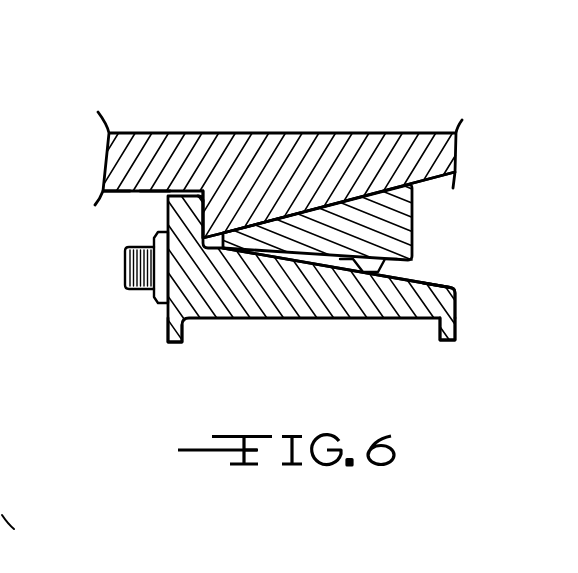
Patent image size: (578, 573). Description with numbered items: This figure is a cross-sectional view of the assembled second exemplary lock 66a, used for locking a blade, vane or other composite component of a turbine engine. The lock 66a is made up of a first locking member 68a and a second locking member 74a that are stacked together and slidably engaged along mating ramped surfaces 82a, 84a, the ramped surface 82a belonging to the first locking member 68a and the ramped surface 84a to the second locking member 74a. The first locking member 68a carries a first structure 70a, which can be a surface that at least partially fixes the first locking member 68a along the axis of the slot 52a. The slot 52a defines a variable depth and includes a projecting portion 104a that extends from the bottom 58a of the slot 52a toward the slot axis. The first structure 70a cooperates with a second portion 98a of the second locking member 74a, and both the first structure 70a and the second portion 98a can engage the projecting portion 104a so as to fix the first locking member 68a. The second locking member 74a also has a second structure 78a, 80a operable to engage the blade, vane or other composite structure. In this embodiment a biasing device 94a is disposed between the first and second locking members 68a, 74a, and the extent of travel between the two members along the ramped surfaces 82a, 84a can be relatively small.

The slot 52a is at (110, 191).
The bottom of the slot 58a is at (144, 191).
The projecting portion 104a is at (222, 202).
The first structure 70a is at (323, 207).
The lock 66a is at (366, 109).
The first locking member 68a is at (399, 216).
The second portion of the second locking member 98a is at (180, 210).
The ramped surface of the second locking member 84a is at (423, 283).
The second structure 80a is at (451, 341).
The biasing device 94a is at (385, 260).
The ramped surface of the first locking member 82a is at (318, 258).
The second locking member 74a is at (151, 339).
The second structure 78a is at (173, 343).